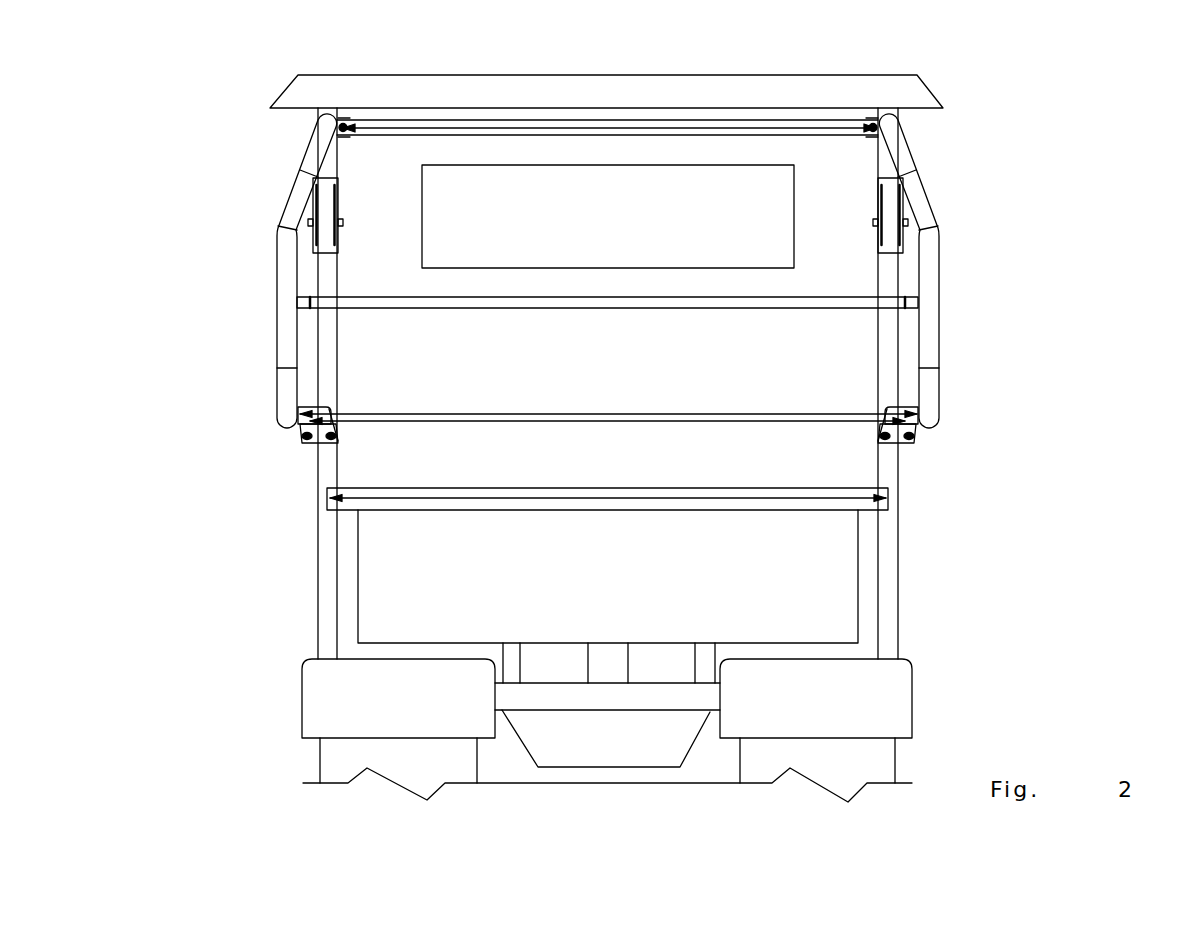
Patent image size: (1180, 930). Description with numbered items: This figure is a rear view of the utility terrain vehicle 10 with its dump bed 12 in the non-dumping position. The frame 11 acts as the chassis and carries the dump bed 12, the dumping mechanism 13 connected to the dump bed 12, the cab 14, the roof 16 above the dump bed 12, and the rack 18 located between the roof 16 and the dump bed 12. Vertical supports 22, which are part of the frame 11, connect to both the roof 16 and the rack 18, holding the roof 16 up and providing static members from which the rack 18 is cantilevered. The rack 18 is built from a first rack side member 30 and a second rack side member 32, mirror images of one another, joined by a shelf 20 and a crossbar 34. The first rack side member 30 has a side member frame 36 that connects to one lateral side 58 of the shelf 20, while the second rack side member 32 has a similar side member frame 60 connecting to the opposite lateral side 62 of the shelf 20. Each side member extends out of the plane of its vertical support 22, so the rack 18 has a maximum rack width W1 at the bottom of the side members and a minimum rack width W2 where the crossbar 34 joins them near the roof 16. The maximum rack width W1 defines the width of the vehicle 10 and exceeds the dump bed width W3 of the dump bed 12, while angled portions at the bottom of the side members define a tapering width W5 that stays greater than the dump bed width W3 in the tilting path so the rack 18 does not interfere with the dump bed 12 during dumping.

The utility terrain vehicle 10 is at (237, 455).
The frame 11 is at (607, 730).
The dump bed 12 is at (574, 545).
The dumping mechanism 13 is at (705, 738).
The cab 14 is at (648, 166).
The roof 16 is at (732, 75).
The rack 18 is at (952, 302).
The shelf 20 is at (607, 294).
The vertical supports 22 is at (883, 288).
The first rack side member 30 is at (260, 303).
The second rack side member 32 is at (955, 271).
The crossbar 34 is at (607, 150).
The side member frame 36 is at (282, 288).
The lateral side 58 is at (305, 297).
The side member frame 60 is at (935, 262).
The lateral side 62 is at (912, 309).
The maximum rack width W1 is at (633, 414).
The minimum rack width W2 is at (627, 130).
The dump bed width W3 is at (618, 498).
The tapering width W5 is at (590, 421).